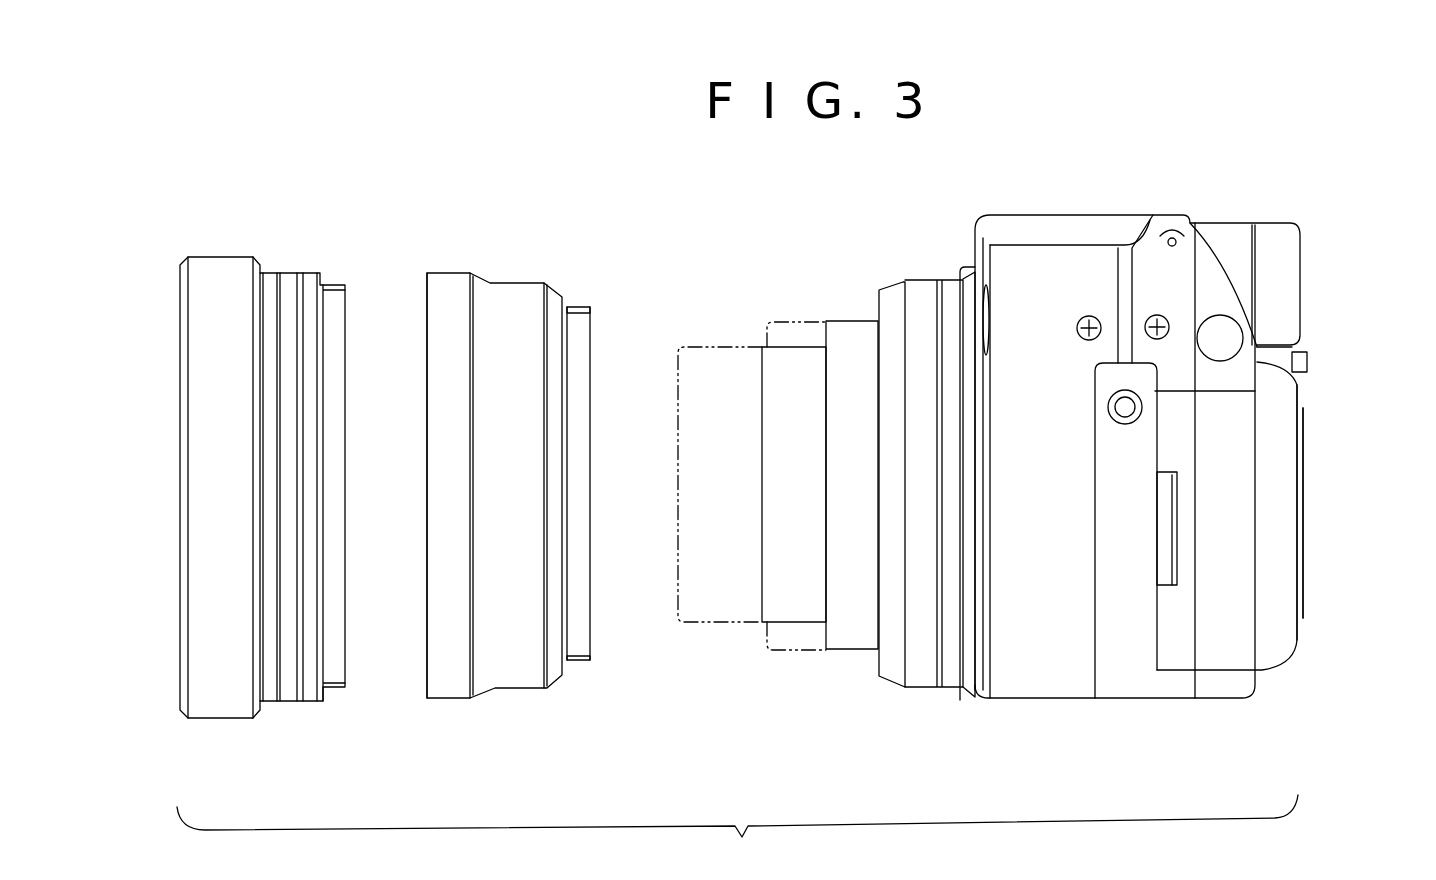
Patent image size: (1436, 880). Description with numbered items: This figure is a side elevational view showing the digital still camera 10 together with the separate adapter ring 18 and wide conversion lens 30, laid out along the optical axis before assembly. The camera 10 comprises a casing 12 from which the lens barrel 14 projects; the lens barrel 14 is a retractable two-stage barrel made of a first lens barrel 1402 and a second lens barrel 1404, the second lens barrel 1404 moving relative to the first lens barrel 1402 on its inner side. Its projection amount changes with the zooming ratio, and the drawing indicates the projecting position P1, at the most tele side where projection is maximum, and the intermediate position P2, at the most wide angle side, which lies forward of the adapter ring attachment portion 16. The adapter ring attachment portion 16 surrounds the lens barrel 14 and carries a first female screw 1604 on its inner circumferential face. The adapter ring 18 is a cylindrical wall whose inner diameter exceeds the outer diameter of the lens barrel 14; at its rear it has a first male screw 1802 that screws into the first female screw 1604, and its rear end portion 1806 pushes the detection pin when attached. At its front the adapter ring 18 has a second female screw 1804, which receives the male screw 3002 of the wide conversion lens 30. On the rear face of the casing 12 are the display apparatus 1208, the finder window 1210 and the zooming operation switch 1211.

The digital still camera 10 is at (1187, 442).
The casing 12 is at (1060, 686).
The lens barrel 14 is at (797, 402).
The first lens barrel 1402 is at (842, 433).
The second lens barrel 1404 is at (790, 346).
The adapter ring attachment portion 16 is at (928, 482).
The first female screw 1604 is at (880, 298).
The adapter ring 18 is at (513, 237).
The first male screw 1802 is at (573, 306).
The second female screw 1804 is at (427, 290).
The rear end portion 1806 is at (592, 335).
The wide conversion lens 30 is at (238, 224).
The male screw 3002 is at (334, 286).
The display apparatus 1208 is at (1303, 528).
The finder window 1210 is at (1300, 272).
The zooming operation switch 1211 is at (1308, 362).
The projecting position P1 is at (678, 624).
The intermediate position P2 is at (766, 651).